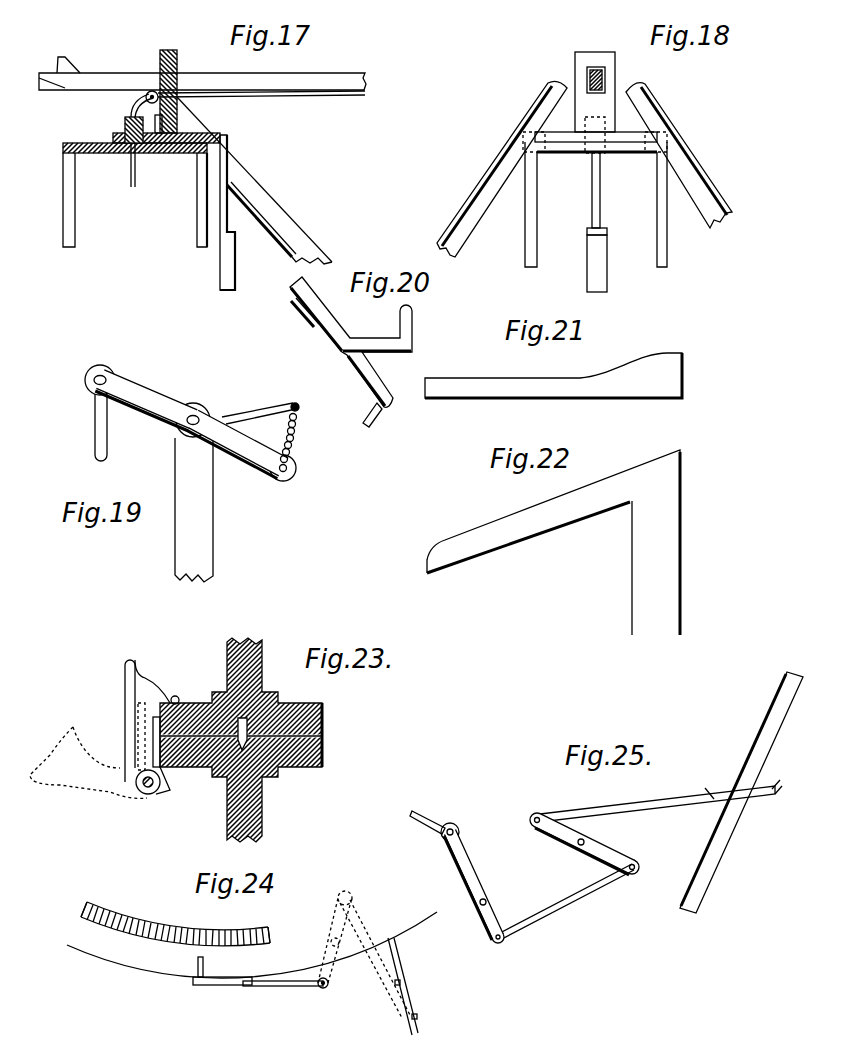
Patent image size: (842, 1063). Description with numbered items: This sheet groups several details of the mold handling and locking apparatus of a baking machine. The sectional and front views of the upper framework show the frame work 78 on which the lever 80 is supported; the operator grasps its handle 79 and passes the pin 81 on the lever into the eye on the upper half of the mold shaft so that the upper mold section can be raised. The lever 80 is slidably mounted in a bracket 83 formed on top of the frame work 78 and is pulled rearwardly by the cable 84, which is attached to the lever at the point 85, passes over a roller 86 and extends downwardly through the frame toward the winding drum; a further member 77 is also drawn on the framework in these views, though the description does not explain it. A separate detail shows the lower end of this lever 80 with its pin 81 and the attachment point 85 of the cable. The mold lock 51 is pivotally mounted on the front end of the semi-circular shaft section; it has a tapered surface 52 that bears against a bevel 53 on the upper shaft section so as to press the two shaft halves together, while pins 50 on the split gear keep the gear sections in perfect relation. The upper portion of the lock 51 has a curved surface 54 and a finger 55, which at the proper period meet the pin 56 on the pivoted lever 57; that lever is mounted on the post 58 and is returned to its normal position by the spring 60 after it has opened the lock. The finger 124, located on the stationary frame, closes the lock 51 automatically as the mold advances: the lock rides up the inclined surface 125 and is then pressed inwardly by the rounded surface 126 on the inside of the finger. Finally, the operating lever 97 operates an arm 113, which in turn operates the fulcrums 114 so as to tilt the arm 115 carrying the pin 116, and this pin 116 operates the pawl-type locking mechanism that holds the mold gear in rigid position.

In FIG. 23, the pins 50 is at (279, 708).
In FIG. 23, the mold lock 51 is at (125, 701).
In FIG. 23, the tapered surface 52 is at (175, 695).
In FIG. 23, the bevel 53 is at (225, 715).
In FIG. 23, the curved surface 54 is at (152, 672).
In FIG. 23, the finger 55 is at (132, 658).
In FIG. 19, the pin 56 is at (95, 433).
In FIG. 19, the pivoted lever 57 is at (170, 403).
In FIG. 19, the post 58 is at (214, 521).
In FIG. 19, the spring 60 is at (296, 441).
In FIG. 17, the rod 77 is at (236, 270).
In FIG. 18, the rod 77 is at (608, 283).
In FIG. 17, the frame work 78 is at (76, 222).
In FIG. 18, the frame work 78 is at (538, 190).
In FIG. 20, the handle 79 is at (414, 326).
In FIG. 17, the lever 80 is at (352, 74).
In FIG. 18, the lever 80 is at (604, 80).
In FIG. 20, the lever 80 is at (328, 342).
In FIG. 20, the pin 81 is at (367, 425).
In FIG. 17, the bracket 83 is at (168, 50).
In FIG. 18, the bracket 83 is at (575, 56).
In FIG. 17, the cable 84 is at (311, 96).
In FIG. 20, the attachment point 85 is at (311, 329).
In FIG. 17, the roller 86 is at (145, 97).
In FIG. 25, the operating lever 97 is at (762, 727).
In FIG. 25, the arm 113 is at (645, 812).
In FIG. 25, the fulcrums 114 is at (560, 855).
In FIG. 25, the arm 115 is at (468, 852).
In FIG. 25, the pin 116 is at (445, 820).
In FIG. 22, the finger 124 is at (500, 546).
In FIG. 22, the inclined surface 125 is at (520, 504).
In FIG. 21, the rounded surface 126 is at (651, 356).